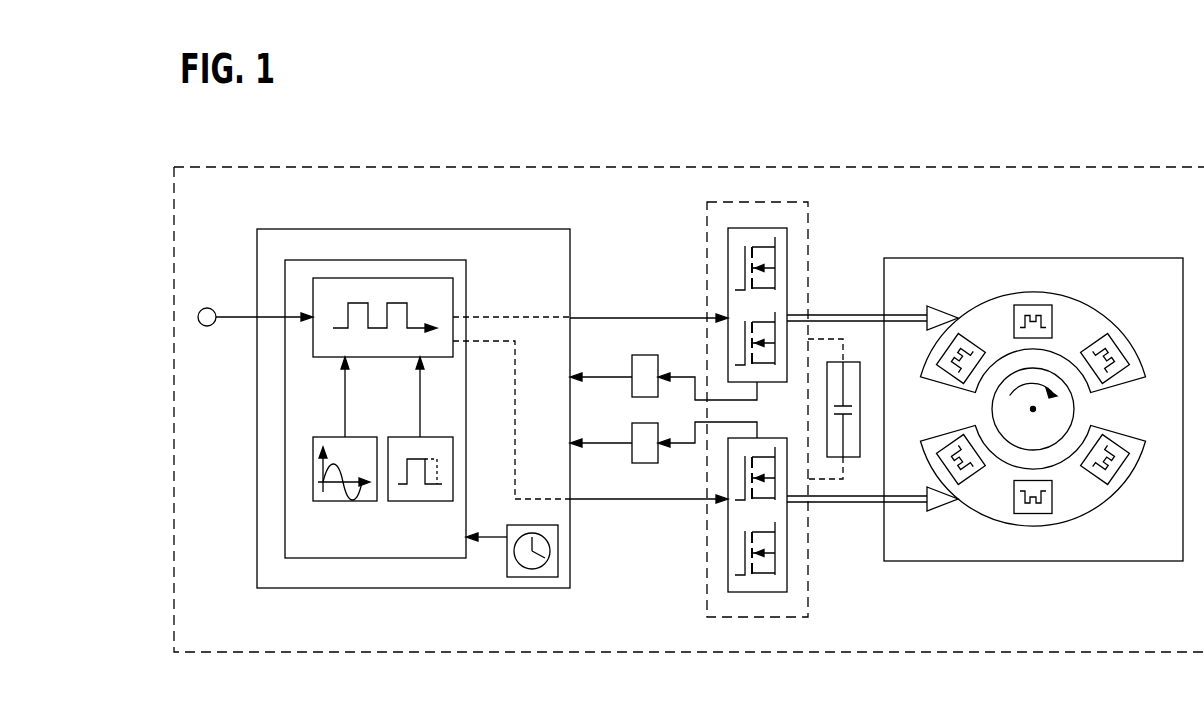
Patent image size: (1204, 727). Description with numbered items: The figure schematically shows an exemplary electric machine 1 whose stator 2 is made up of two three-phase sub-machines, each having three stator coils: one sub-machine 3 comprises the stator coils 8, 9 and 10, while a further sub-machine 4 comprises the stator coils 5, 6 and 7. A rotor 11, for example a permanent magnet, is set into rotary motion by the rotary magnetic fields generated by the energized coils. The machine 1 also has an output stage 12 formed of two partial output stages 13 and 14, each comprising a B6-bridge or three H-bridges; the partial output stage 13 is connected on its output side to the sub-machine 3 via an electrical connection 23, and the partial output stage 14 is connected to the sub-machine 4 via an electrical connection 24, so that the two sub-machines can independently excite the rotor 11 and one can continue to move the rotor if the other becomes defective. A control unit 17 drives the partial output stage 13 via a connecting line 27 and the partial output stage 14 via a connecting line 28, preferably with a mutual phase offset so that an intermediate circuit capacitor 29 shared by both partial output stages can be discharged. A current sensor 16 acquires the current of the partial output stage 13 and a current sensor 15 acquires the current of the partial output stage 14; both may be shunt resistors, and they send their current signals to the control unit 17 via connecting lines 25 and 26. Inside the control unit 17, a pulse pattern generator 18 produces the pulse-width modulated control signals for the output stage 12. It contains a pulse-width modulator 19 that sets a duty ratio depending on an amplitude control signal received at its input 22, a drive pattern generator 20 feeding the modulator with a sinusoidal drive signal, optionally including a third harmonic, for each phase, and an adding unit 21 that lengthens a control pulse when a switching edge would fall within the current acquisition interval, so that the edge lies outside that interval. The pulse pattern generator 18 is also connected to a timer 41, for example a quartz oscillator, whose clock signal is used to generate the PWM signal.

The electric machine 1 is at (548, 165).
The stator 2 is at (1027, 561).
The sub-machine 3 is at (1039, 405).
The further sub-machine 4 is at (1132, 470).
The stator coil 5 is at (1096, 482).
The stator coil 6 is at (1052, 497).
The stator coil 7 is at (980, 475).
The stator coil 8 is at (975, 338).
The stator coil 9 is at (1032, 305).
The stator coil 10 is at (1118, 337).
The rotor 11 is at (1075, 409).
The output stage 12 is at (730, 202).
The partial output stage 13 is at (762, 228).
The partial output stage 14 is at (757, 592).
The current sensor 15 is at (645, 463).
The current sensor 16 is at (638, 355).
The control unit 17 is at (390, 229).
The pulse pattern generator 18 is at (428, 260).
The pulse-width modulator 19 is at (336, 278).
The drive pattern generator 20 is at (343, 501).
The adding unit 21 is at (420, 501).
The input 22 is at (198, 315).
The electrical connection 23 is at (848, 314).
The electrical connection 24 is at (845, 503).
The connecting line 25 is at (598, 372).
The connecting line 26 is at (600, 447).
The connecting line 27 is at (676, 316).
The connecting line 28 is at (684, 500).
The intermediate circuit capacitor 29 is at (861, 409).
The timer 41 is at (532, 577).